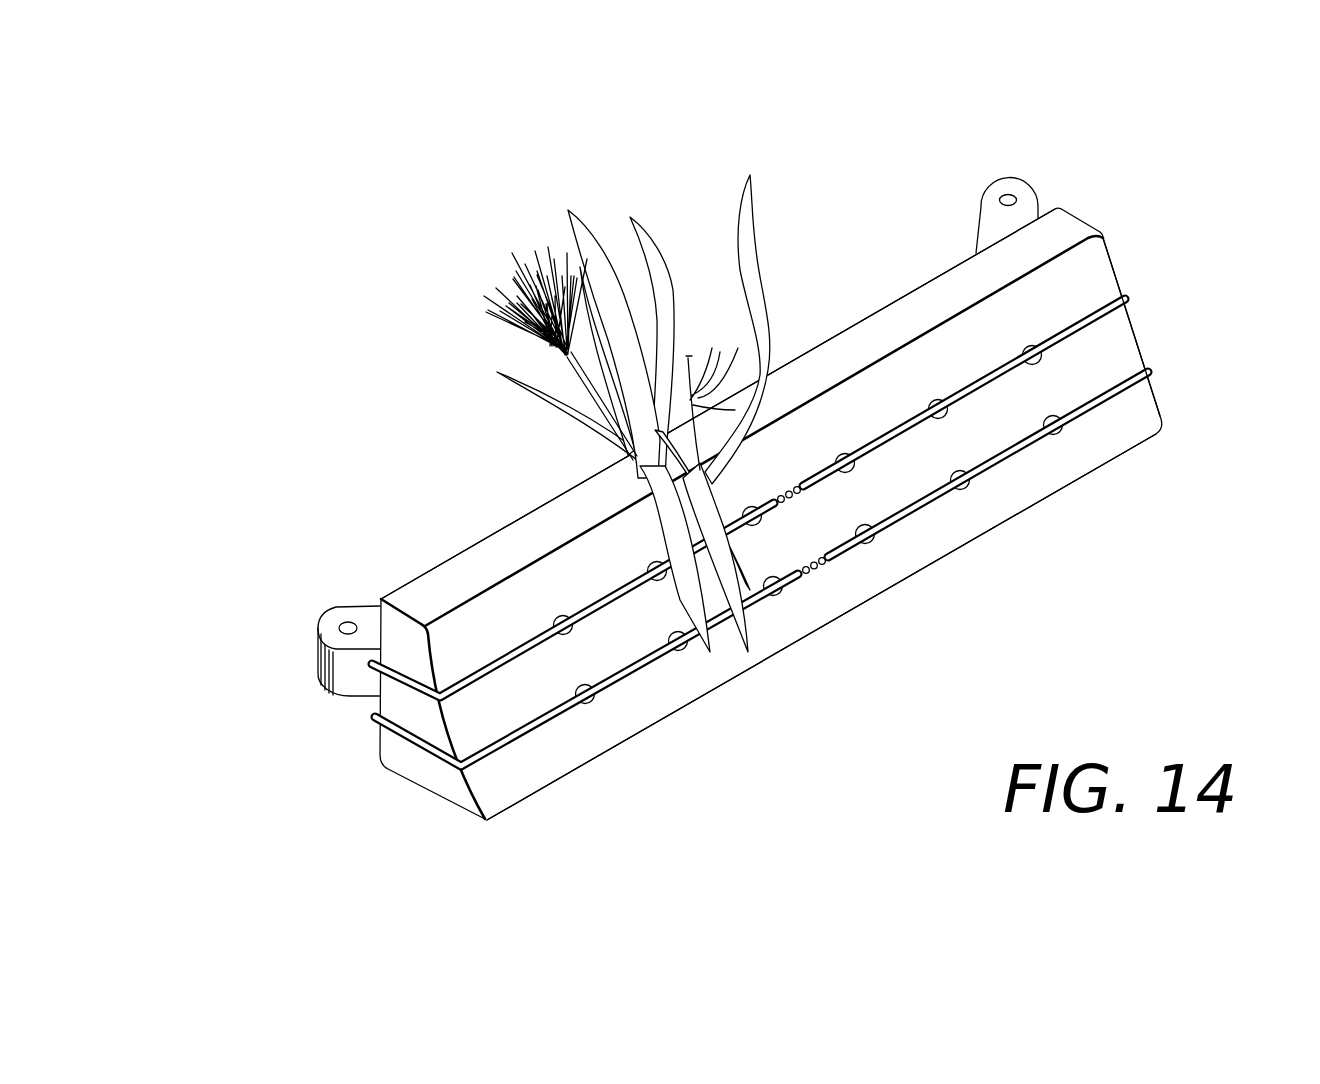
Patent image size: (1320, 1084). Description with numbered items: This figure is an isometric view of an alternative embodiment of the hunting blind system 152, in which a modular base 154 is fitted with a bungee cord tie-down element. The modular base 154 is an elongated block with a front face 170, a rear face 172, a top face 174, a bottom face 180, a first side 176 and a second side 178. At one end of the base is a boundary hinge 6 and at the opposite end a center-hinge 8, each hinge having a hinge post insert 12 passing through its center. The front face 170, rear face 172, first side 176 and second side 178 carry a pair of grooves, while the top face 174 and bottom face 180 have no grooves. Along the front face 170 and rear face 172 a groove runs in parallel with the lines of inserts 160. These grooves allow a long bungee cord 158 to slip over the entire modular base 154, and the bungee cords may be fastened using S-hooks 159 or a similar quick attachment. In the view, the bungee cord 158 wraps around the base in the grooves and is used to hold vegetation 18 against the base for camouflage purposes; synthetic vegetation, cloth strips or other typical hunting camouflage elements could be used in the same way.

The hunting blind system 152 is at (683, 474).
The modular base 154 is at (739, 474).
The vegetation 18 is at (481, 225).
The hinge post insert 12 is at (1008, 196).
The boundary hinge 6 is at (978, 217).
The center-hinge 8 is at (318, 655).
The first side 176 is at (390, 707).
The second side 178 is at (1117, 263).
The rear face 172 is at (893, 302).
The top face 174 is at (510, 583).
The front face 170 is at (546, 628).
The bottom face 180 is at (565, 782).
The bungee cord 158 is at (943, 482).
The S-hook 159 is at (780, 500).
The insert 160 is at (1040, 360).